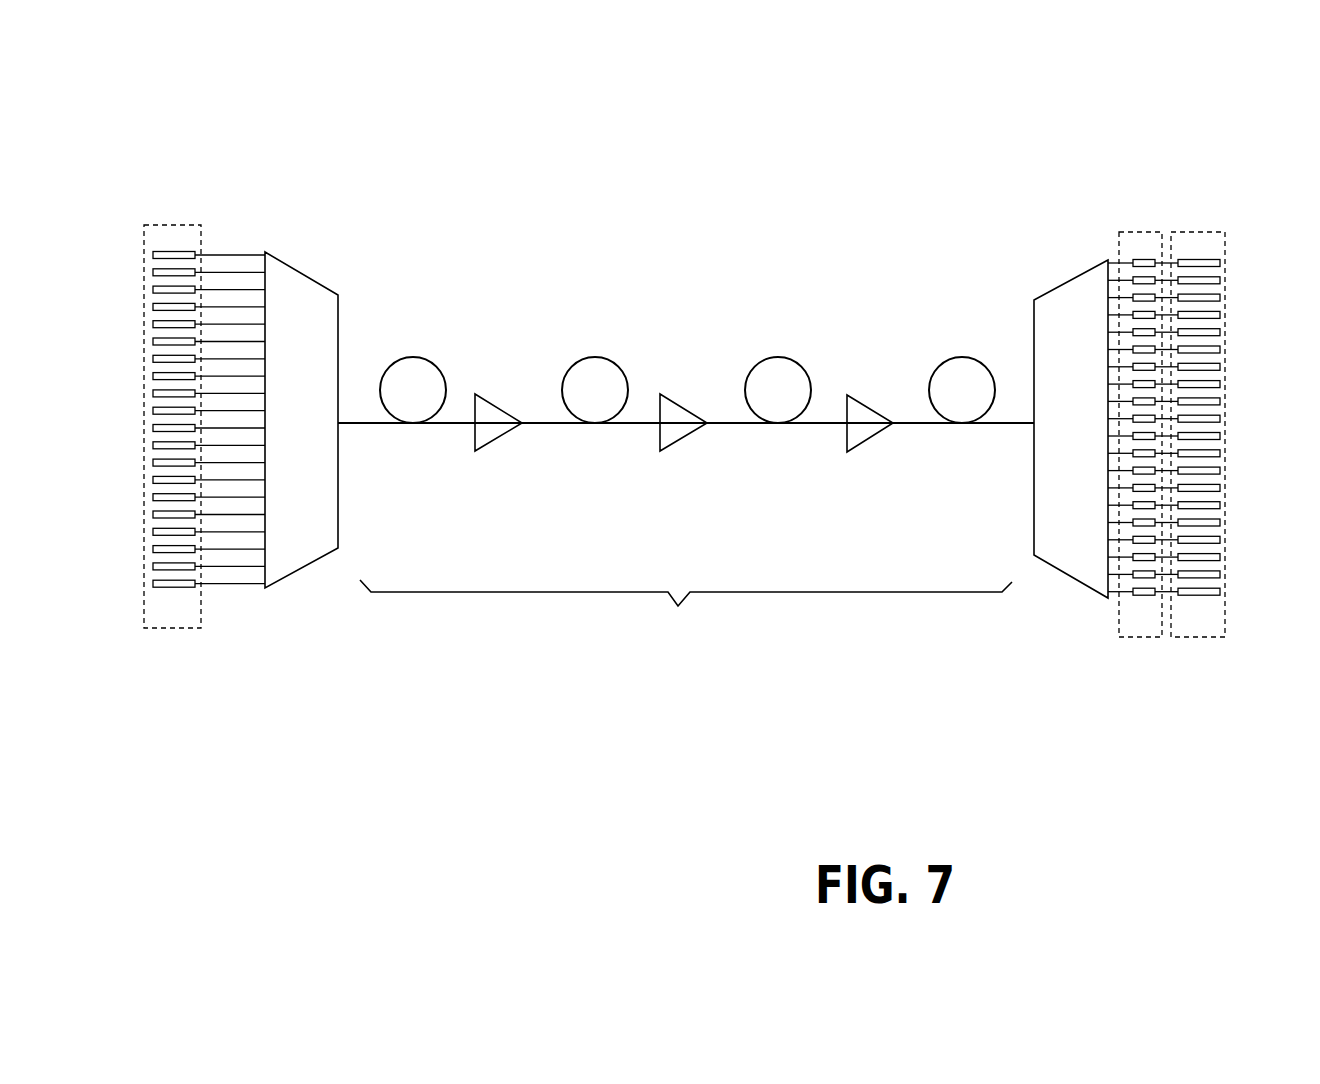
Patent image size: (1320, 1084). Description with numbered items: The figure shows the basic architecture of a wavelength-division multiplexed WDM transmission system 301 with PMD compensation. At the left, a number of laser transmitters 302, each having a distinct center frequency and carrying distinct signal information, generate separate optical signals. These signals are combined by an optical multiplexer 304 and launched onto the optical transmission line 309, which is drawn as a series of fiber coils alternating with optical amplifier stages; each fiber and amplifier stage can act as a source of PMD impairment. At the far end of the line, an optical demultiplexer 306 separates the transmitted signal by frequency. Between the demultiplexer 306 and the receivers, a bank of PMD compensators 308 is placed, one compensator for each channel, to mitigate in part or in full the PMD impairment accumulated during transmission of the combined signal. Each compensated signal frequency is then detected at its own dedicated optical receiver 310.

The WDM transmission system 301 is at (822, 208).
The laser transmitters 302 is at (172, 226).
The optical multiplexer 304 is at (302, 276).
The optical demultiplexer 306 is at (1054, 290).
The PMD compensators 308 is at (1146, 230).
The optical transmission line 309 is at (617, 300).
The optical receiver 310 is at (1205, 230).